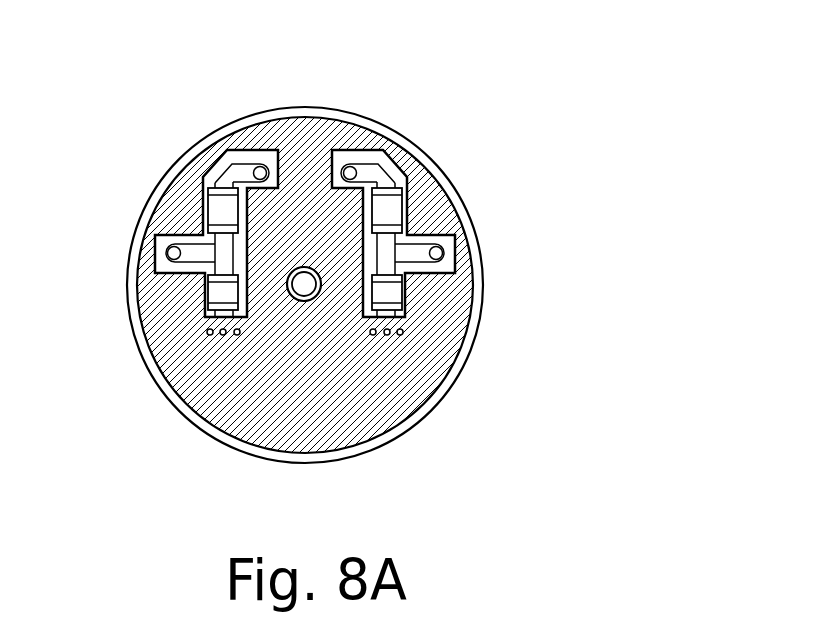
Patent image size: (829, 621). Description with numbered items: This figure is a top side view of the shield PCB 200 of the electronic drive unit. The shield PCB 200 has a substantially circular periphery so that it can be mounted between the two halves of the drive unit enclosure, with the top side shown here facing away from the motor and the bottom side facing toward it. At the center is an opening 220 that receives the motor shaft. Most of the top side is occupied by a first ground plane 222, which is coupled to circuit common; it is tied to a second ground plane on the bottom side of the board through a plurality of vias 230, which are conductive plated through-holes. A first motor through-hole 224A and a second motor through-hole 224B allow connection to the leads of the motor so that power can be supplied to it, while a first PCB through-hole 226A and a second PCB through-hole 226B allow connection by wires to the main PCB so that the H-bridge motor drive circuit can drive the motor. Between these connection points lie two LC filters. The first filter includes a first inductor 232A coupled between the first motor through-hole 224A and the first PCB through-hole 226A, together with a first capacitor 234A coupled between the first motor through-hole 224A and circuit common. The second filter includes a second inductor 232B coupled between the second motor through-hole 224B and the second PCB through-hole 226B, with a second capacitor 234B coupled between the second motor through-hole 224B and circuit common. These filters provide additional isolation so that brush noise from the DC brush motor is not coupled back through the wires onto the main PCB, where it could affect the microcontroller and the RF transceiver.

The shield PCB 200 is at (593, 62).
The opening 220 is at (313, 297).
The first ground plane 222 is at (272, 408).
The first motor through-hole 224A is at (170, 246).
The second motor through-hole 224B is at (440, 250).
The first PCB through-hole 226A is at (264, 166).
The second PCB through-hole 226B is at (349, 165).
The vias 230 is at (224, 342).
The first inductor 232A is at (208, 200).
The second inductor 232B is at (398, 200).
The first capacitor 234A is at (212, 292).
The second capacitor 234B is at (398, 291).